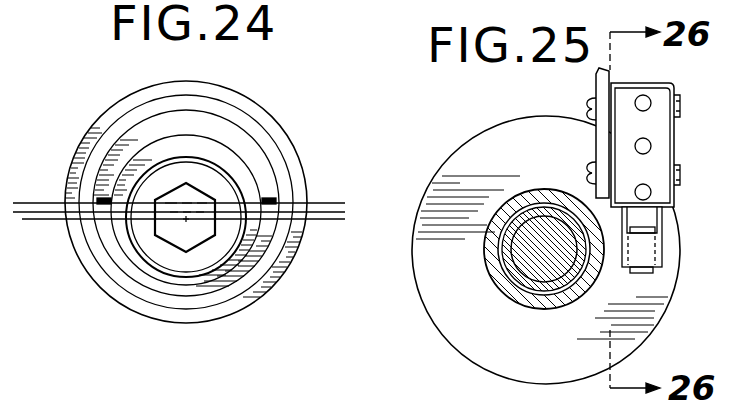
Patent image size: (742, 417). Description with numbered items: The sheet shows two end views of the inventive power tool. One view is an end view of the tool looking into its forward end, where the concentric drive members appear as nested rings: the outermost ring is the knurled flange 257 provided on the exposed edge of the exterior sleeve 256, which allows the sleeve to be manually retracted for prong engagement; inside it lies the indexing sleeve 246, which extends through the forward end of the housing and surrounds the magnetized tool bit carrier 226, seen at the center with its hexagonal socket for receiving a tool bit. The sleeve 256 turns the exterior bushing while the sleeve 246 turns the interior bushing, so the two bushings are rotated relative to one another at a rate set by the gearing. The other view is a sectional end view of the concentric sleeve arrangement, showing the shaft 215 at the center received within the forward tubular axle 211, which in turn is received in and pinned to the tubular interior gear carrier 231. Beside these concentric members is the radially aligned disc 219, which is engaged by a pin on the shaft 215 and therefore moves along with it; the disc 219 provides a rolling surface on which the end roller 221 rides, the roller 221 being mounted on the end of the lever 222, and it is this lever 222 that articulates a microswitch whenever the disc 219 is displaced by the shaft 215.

In FIG. 24, the knurled flange 257 is at (233, 108).
In FIG. 24, the exterior sleeve 256 is at (240, 143).
In FIG. 24, the indexing sleeve 246 is at (242, 178).
In FIG. 24, the magnetized tool bit carrier 226 is at (208, 258).
In FIG. 25, the disc 219 is at (497, 135).
In FIG. 25, the interior gear carrier 231 is at (548, 193).
In FIG. 25, the forward tubular axle 211 is at (510, 260).
In FIG. 25, the shaft 215 is at (535, 277).
In FIG. 25, the lever 222 is at (663, 242).
In FIG. 25, the end roller 221 is at (653, 272).